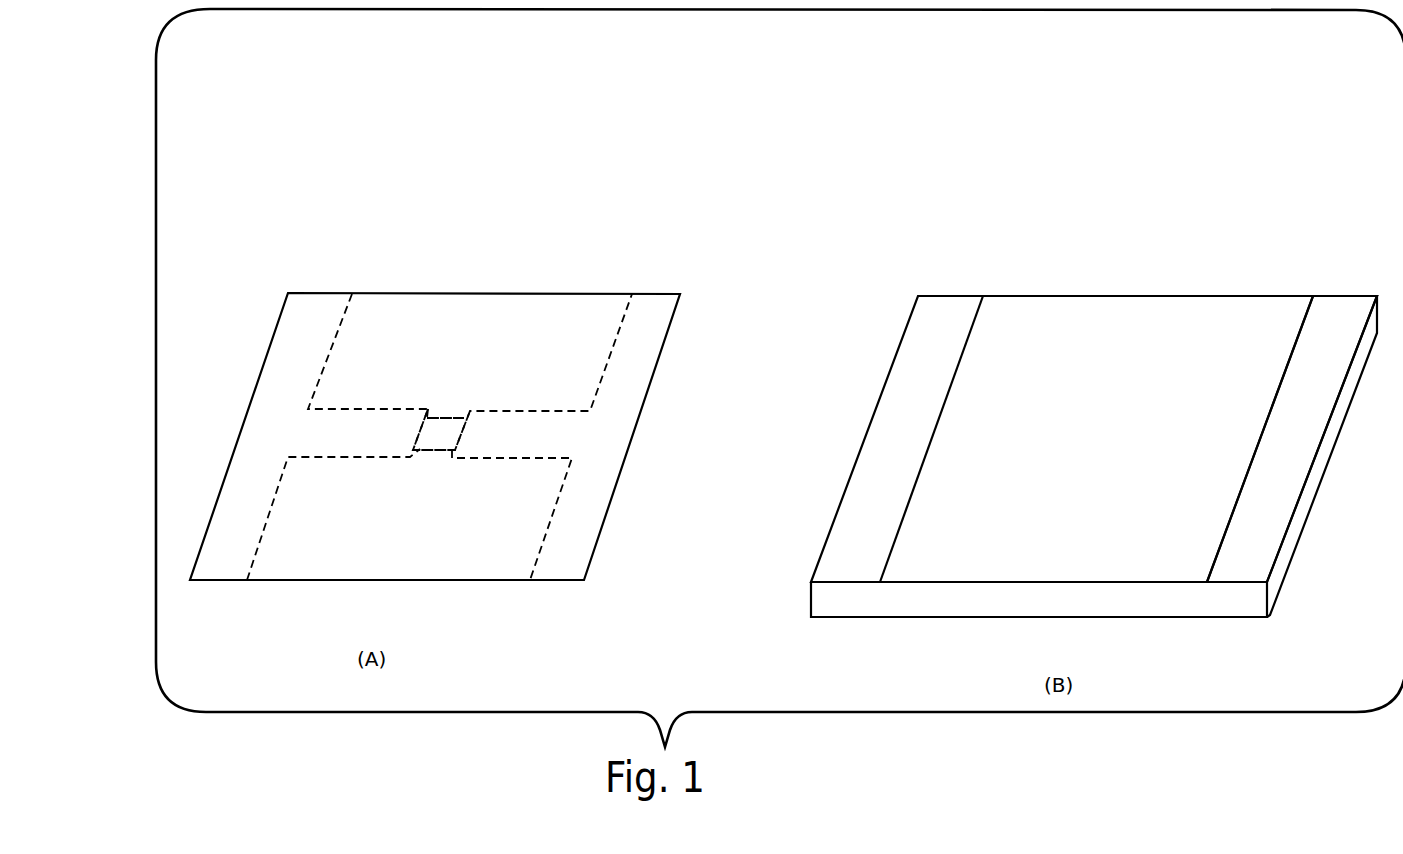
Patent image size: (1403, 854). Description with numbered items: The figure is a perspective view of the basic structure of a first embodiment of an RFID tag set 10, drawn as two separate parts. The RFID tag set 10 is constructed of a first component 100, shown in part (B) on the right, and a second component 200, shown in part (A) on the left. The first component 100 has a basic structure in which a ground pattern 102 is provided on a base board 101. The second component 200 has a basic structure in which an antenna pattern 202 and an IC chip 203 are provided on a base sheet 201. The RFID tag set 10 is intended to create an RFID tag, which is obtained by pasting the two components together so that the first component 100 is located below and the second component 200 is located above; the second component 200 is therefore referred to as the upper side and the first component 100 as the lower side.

The RFID tag set 10 is at (1097, 143).
The second component 200 is at (433, 267).
The base sheet 201 is at (577, 325).
The antenna pattern 202 is at (597, 440).
The IC chip 203 is at (437, 437).
The first component 100 is at (1095, 255).
The base board 101 is at (1224, 327).
The ground pattern 102 is at (1338, 328).